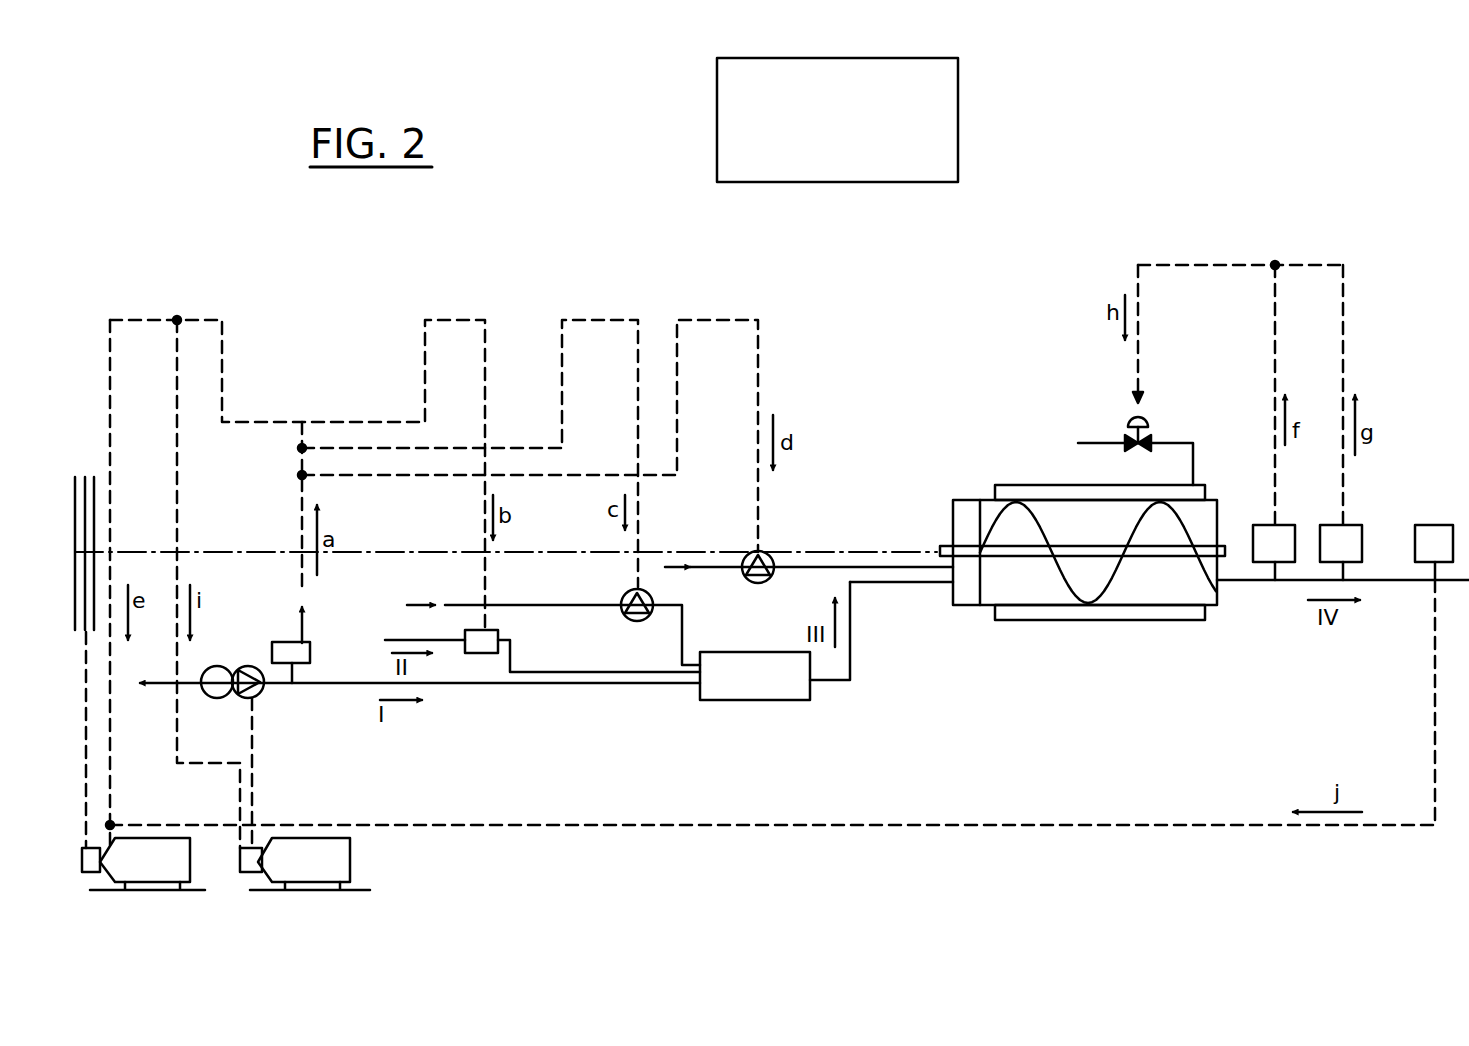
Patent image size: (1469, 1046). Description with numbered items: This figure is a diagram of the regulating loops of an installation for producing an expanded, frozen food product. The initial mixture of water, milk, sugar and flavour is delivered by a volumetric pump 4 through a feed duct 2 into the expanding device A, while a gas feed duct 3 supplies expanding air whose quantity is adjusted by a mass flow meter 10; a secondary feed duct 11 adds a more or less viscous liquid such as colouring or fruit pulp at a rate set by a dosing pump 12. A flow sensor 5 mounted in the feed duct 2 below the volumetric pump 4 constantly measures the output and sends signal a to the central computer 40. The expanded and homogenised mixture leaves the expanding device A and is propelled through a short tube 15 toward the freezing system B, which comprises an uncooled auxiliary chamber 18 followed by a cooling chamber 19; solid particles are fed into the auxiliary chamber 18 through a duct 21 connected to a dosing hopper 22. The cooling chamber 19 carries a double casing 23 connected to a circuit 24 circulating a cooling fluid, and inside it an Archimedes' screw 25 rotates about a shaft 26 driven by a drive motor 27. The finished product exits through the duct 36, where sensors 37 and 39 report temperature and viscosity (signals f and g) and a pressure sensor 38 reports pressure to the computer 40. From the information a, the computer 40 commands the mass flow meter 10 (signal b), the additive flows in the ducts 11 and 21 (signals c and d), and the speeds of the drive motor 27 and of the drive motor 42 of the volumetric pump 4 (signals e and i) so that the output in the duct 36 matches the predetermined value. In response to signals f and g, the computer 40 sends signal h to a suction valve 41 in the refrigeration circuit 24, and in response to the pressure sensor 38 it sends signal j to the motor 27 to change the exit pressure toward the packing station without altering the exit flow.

The feed duct 2 is at (627, 684).
The gas feed duct 3 is at (533, 672).
The volumetric pump 4 is at (240, 697).
The flow sensor 5 is at (280, 642).
The mass flow meter 10 is at (476, 648).
The secondary feed duct 11 is at (576, 580).
The dosing pump 12 is at (632, 618).
The tube 15 is at (852, 664).
The auxiliary chamber 18 is at (965, 597).
The cooling chamber 19 is at (1130, 583).
The duct 21 is at (884, 576).
The dosing hopper 22 is at (762, 584).
The double casing 23 is at (1018, 490).
The circuit 24 is at (1148, 438).
The Archimedes' screw 25 is at (1060, 578).
The shaft 26 is at (1103, 530).
The drive motor 27 is at (152, 850).
The duct 36 is at (1396, 565).
The sensor 37 is at (1262, 530).
The pressure sensor 38 is at (1427, 530).
The sensor 39 is at (1330, 530).
The central computer 40 is at (958, 105).
The suction valve 41 is at (1125, 435).
The drive motor 42 is at (340, 850).
The expanding device A is at (757, 685).
The freezing system B is at (1082, 544).